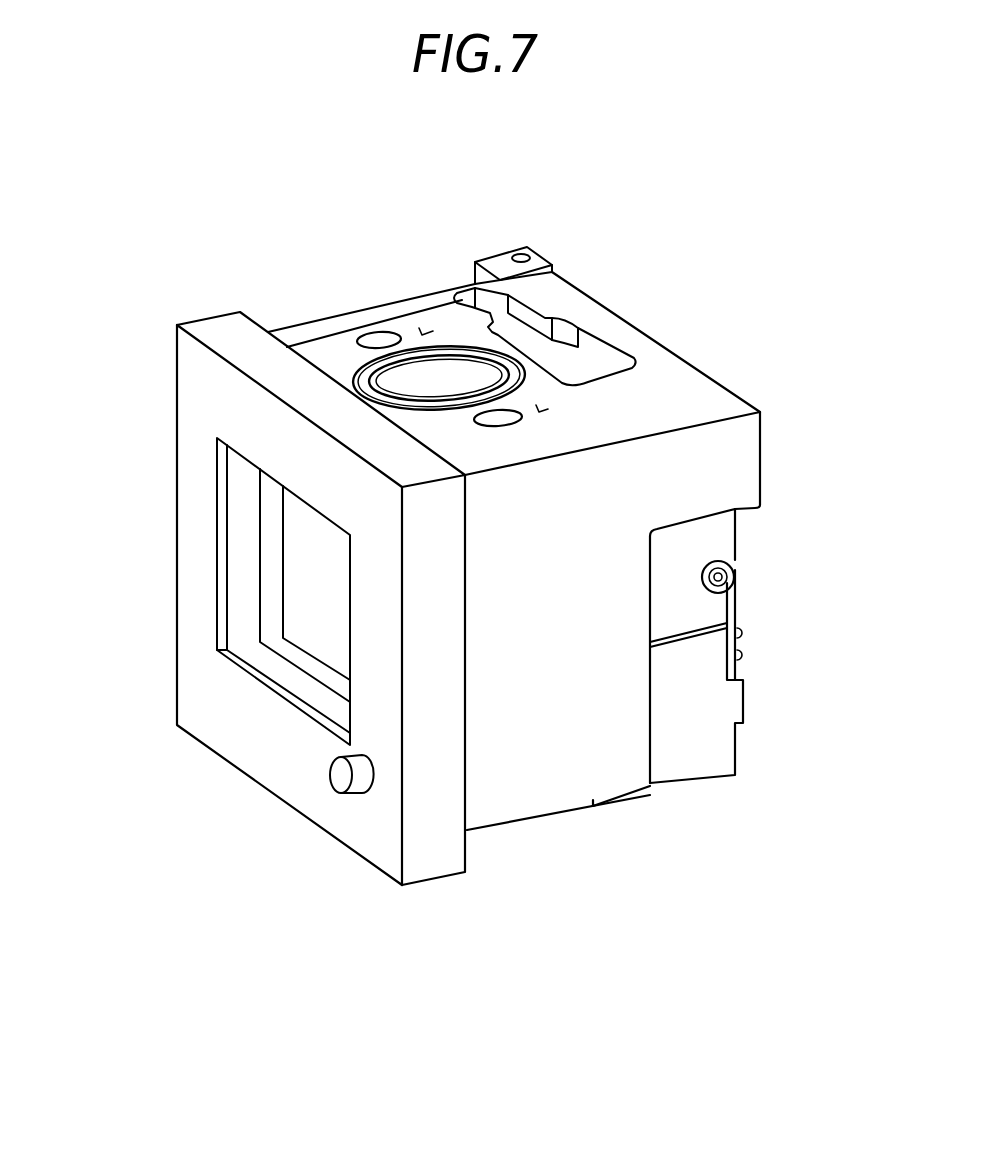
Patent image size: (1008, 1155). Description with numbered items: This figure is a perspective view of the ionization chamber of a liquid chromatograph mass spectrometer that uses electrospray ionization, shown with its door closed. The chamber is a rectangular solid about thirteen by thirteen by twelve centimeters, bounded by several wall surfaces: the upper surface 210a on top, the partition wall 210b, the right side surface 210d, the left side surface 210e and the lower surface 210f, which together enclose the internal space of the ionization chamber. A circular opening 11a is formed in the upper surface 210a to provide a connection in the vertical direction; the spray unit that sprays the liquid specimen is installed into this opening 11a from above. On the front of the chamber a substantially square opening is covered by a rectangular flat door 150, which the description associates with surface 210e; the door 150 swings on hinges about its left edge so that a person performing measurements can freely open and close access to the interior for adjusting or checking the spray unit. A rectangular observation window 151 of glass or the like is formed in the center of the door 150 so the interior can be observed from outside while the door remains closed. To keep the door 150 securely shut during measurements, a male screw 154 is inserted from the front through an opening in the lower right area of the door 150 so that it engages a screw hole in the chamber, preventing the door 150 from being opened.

The door 150 is at (205, 527).
The observation window 151 is at (308, 605).
The male screw 154 is at (352, 795).
The circular opening 11a is at (460, 388).
The first wall surface (upper surface) 210a is at (572, 318).
The second wall surface (partition wall) 210b is at (747, 478).
The fourth wall surface (right side surface) 210d is at (565, 770).
The fifth wall surface (left side surface) 210e is at (343, 315).
The sixth wall surface (lower surface) 210f is at (697, 787).